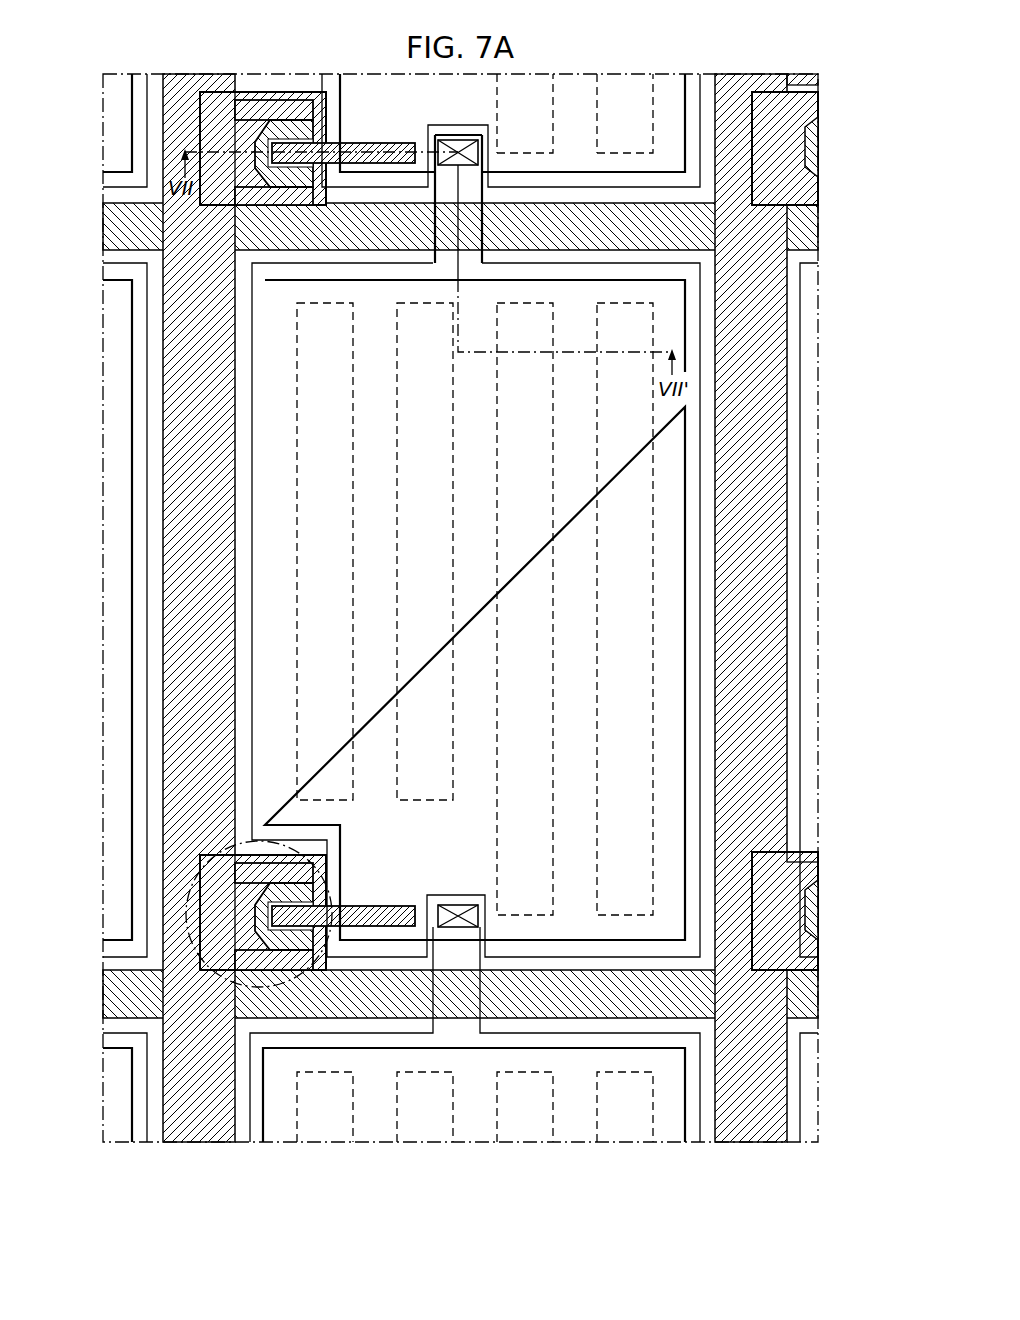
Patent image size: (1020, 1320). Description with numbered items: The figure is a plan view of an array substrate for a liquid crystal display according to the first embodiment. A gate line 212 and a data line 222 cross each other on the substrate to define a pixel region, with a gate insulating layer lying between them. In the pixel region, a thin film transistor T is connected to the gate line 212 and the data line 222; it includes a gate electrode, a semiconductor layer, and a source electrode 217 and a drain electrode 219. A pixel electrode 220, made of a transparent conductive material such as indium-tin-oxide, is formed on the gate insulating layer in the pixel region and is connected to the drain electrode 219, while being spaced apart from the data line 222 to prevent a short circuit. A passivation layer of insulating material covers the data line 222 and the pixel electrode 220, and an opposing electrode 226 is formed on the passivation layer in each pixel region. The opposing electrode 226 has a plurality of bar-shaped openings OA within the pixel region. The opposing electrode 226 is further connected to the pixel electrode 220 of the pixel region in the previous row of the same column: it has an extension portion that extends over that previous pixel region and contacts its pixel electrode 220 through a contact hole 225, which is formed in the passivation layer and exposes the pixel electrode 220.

The gate line 212 is at (368, 990).
The source electrode 217 is at (285, 963).
The drain electrode 219 is at (375, 903).
The pixel electrode 220 is at (686, 517).
The data line 222 is at (185, 556).
The contact hole 225 is at (458, 134).
The opposing electrode 226 is at (700, 558).
The thin film transistor T is at (197, 885).
The bar-shaped openings OA is at (636, 461).